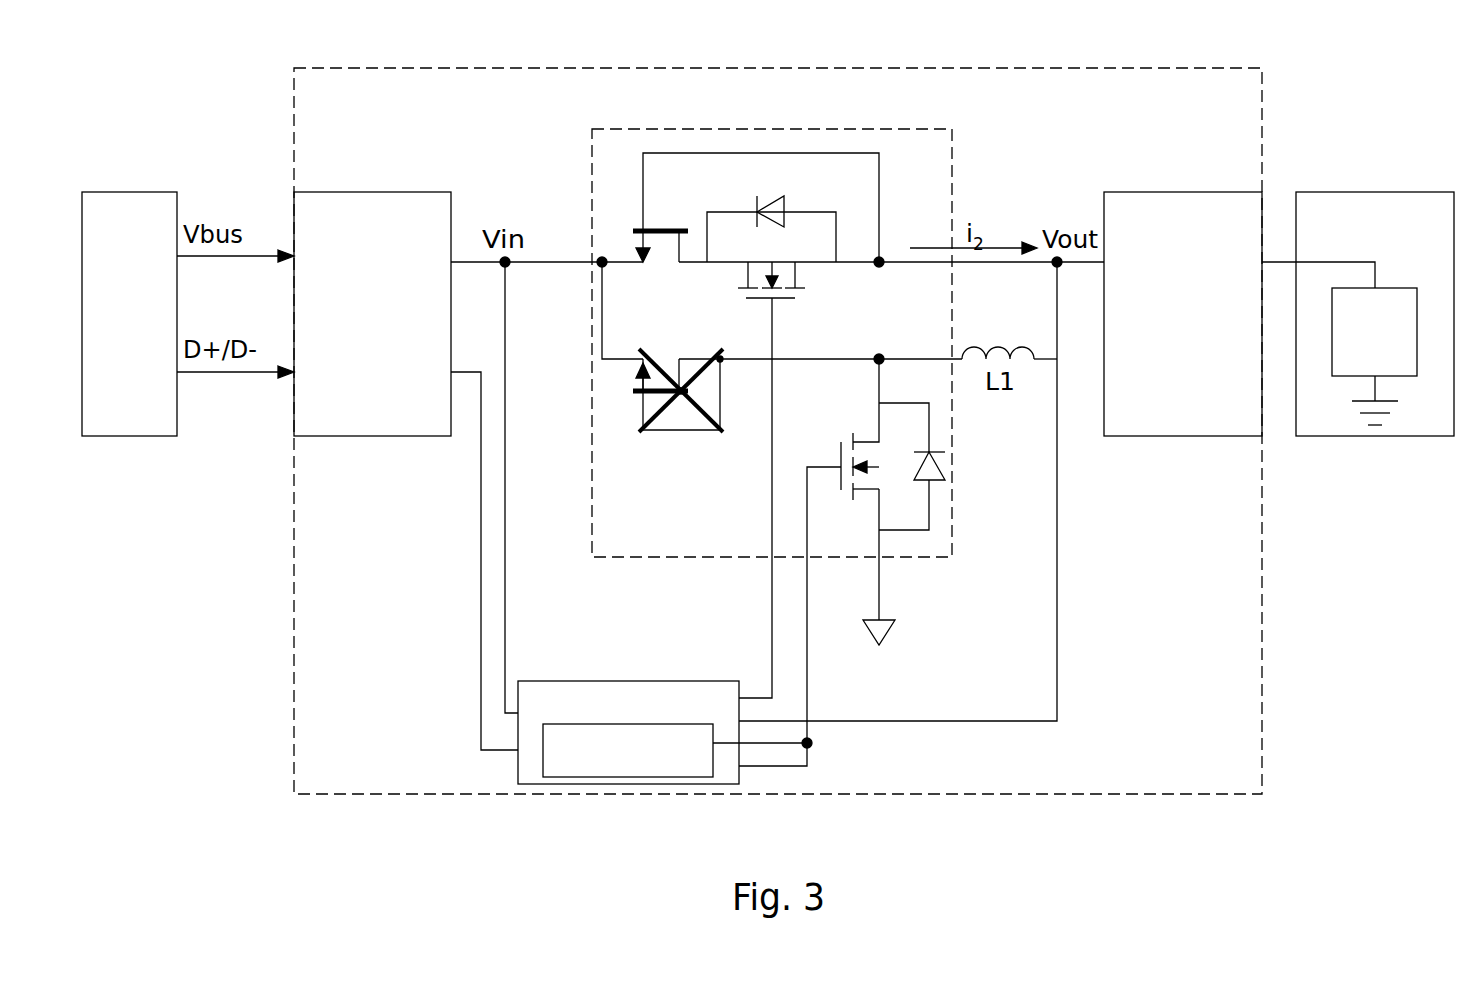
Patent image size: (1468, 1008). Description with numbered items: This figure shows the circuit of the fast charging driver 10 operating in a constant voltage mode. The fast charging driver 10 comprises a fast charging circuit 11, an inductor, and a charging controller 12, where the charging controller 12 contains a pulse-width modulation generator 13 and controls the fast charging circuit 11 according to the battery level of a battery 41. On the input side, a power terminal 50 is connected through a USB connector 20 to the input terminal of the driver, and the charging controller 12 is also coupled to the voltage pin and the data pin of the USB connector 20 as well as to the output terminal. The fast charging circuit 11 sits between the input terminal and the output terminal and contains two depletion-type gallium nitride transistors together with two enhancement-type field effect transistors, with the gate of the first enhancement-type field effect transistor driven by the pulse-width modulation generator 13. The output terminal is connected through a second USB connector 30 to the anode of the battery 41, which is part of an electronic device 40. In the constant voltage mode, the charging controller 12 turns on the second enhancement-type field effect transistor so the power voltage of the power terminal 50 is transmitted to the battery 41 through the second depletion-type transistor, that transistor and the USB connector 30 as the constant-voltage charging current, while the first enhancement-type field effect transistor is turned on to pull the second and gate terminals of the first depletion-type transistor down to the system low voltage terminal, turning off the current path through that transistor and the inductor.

The fast charging driver 10 is at (505, 68).
The fast charging circuit 11 is at (640, 557).
The charging controller 12 is at (532, 784).
The pulse-width modulation generator 13 is at (580, 777).
The USB connector 20 is at (357, 436).
The USB connector 30 is at (1143, 436).
The electronic device 40 is at (1417, 436).
The battery 41 is at (1332, 358).
The power terminal 50 is at (147, 436).